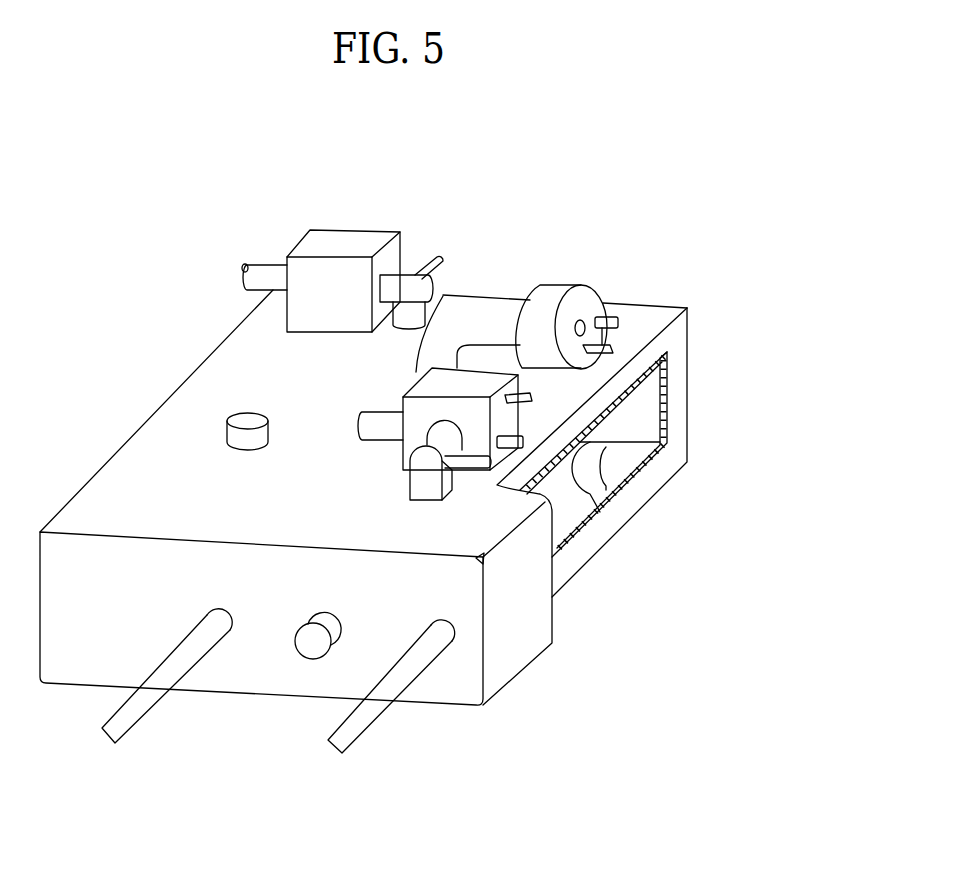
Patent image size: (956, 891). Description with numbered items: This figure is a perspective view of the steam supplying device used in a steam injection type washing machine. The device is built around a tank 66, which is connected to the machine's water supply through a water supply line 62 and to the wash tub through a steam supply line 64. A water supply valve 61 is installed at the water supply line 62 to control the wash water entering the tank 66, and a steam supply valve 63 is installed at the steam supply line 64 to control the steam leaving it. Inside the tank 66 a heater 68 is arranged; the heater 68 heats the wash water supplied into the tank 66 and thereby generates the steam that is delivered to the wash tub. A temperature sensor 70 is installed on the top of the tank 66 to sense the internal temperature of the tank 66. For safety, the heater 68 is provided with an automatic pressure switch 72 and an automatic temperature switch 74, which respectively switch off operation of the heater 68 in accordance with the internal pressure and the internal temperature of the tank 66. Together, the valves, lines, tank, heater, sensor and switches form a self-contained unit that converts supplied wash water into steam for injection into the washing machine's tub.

The water supply valve 61 is at (317, 243).
The water supply line 62 is at (263, 270).
The steam supply valve 63 is at (423, 388).
The steam supply line 64 is at (358, 427).
The tank 66 is at (667, 368).
The heater 68 is at (585, 514).
The temperature sensor 70 is at (240, 417).
The automatic pressure switch 72 is at (595, 293).
The automatic temperature switch 74 is at (313, 641).